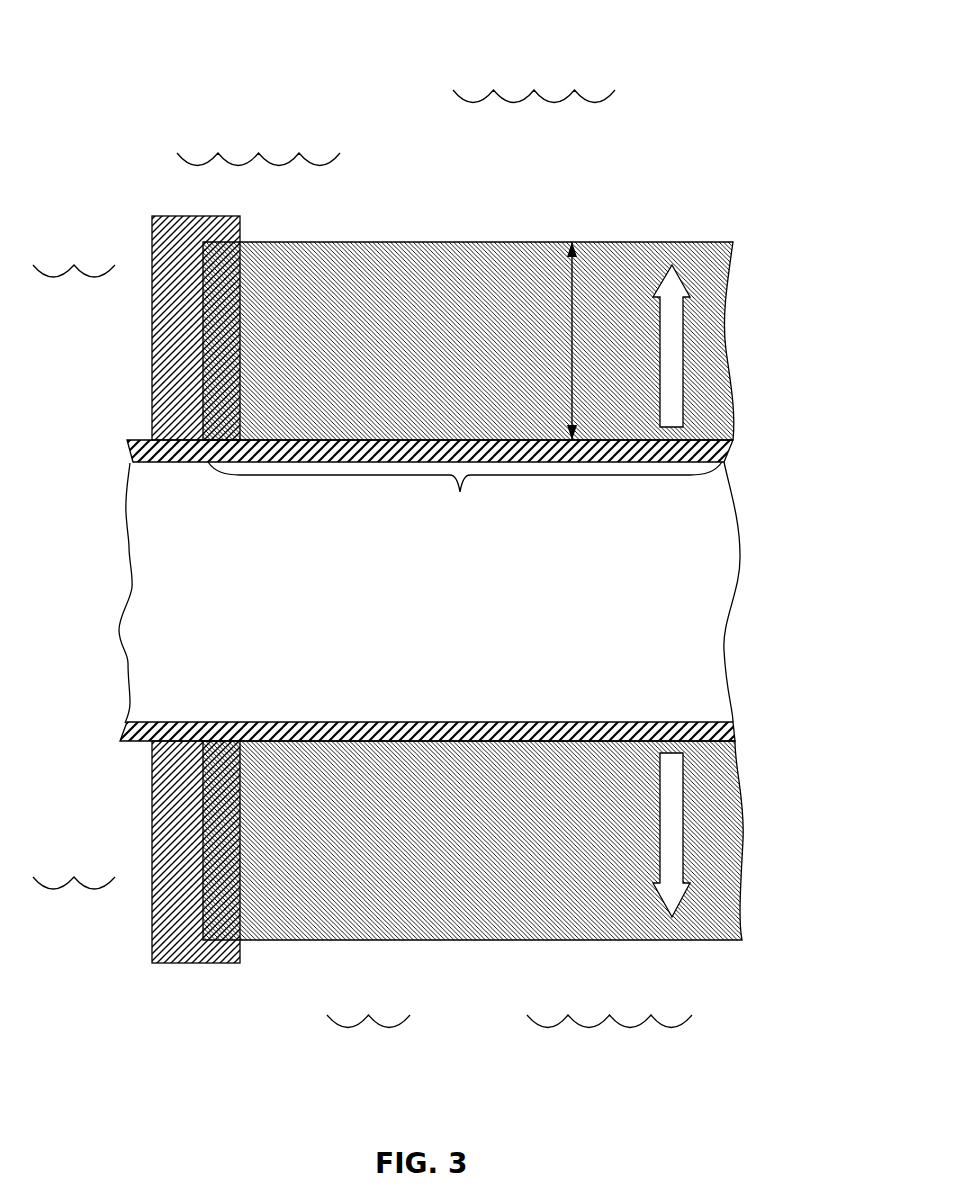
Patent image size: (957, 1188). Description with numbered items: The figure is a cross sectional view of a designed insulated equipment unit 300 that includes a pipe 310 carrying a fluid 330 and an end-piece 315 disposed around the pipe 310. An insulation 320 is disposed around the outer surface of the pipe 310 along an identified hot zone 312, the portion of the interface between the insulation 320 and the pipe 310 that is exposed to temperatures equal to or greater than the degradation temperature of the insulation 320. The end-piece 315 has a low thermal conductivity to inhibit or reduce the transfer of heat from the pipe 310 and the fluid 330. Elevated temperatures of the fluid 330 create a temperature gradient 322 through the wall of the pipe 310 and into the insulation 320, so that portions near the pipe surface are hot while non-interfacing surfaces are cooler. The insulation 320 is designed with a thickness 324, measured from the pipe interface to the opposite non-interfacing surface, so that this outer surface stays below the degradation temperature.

The insulated equipment unit 300 is at (342, 56).
The pipe 310 is at (128, 449).
The hot zone 312 is at (465, 495).
The end-piece 315 is at (196, 356).
The insulation 320 is at (443, 401).
The temperature gradient 322 is at (672, 287).
The thickness 324 is at (573, 272).
The fluid 330 is at (378, 621).